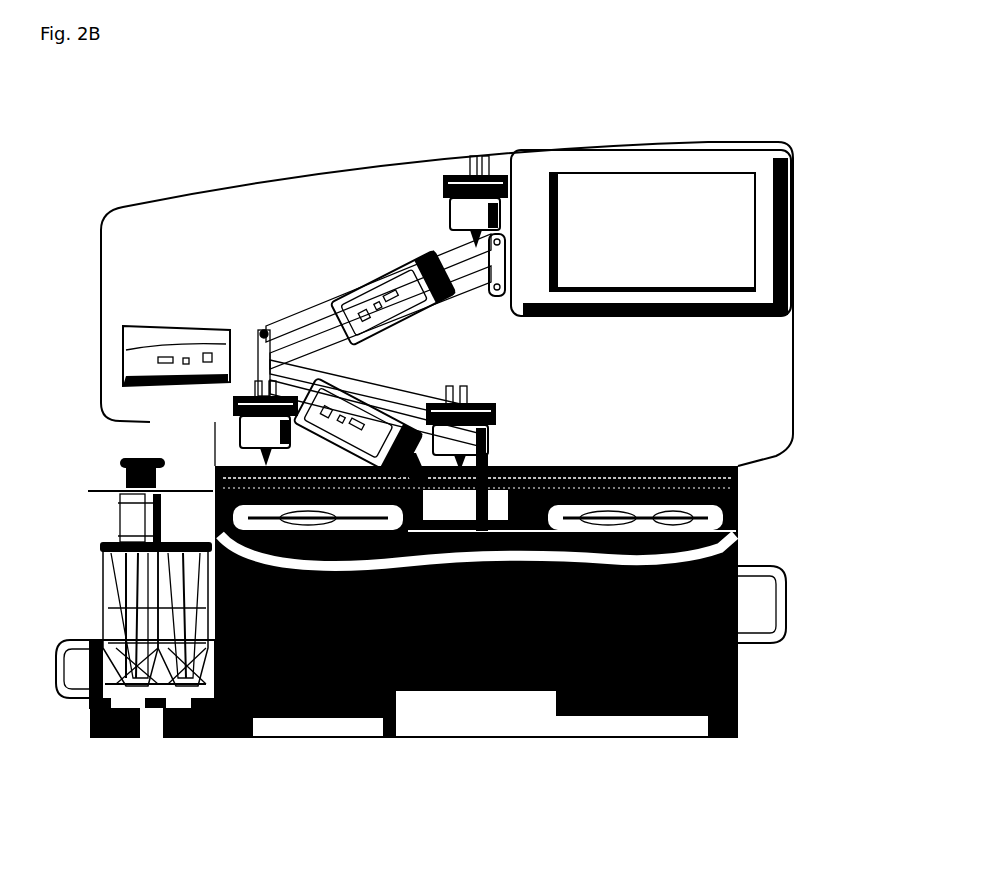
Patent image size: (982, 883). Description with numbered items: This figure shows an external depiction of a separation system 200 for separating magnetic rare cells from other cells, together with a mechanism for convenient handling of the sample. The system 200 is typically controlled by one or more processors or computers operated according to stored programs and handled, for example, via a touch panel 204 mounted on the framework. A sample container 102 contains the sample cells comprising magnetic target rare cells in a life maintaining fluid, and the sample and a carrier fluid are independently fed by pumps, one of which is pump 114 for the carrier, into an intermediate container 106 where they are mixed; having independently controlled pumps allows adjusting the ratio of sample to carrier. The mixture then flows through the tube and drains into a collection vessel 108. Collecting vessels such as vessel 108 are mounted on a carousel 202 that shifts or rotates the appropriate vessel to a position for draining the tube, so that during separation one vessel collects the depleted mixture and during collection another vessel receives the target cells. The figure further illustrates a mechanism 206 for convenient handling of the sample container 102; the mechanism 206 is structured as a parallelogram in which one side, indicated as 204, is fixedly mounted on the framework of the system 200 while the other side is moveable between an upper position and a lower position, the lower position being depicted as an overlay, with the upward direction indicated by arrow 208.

The external depiction of separation system 200 is at (727, 108).
The touch panel 204 is at (722, 207).
The mechanism for convenient handling of sample container 206 is at (290, 307).
The pump 114 is at (365, 283).
The sample container 102 is at (468, 175).
The intermediate container 106 is at (240, 437).
The carousel 202 is at (130, 690).
The collection vessel 108 is at (183, 625).
The arrow 208 is at (823, 470).